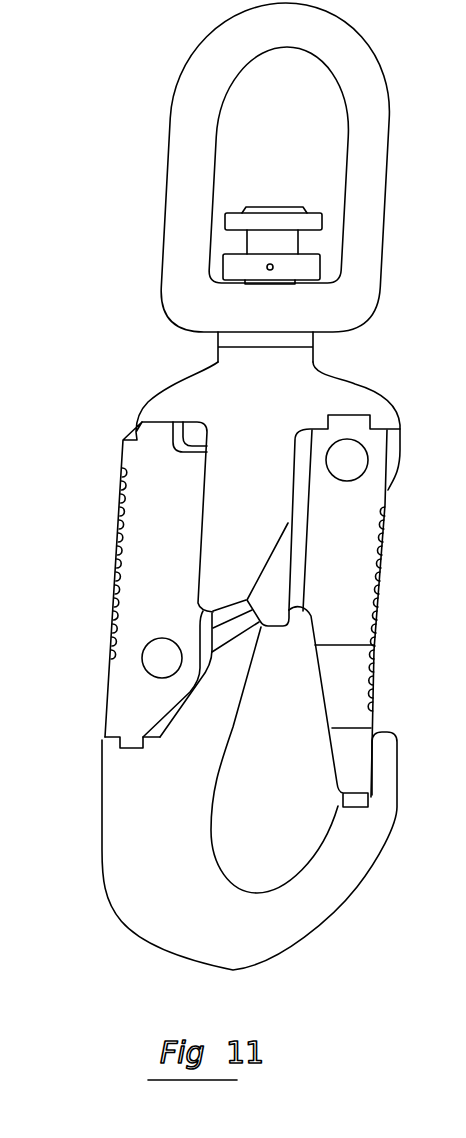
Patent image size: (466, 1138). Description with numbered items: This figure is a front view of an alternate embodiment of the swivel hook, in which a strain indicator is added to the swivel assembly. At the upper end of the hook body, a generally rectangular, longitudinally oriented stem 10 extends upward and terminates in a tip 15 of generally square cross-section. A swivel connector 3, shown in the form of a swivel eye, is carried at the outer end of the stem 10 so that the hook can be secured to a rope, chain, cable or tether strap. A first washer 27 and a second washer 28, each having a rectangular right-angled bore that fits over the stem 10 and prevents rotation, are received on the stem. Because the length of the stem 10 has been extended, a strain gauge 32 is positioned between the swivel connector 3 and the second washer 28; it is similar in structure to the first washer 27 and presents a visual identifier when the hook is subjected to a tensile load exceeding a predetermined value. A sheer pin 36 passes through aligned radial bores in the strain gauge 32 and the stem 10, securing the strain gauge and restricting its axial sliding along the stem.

The swivel connector 3 is at (178, 110).
The tip 15 is at (250, 208).
The second washer 28 is at (228, 222).
The stem 10 is at (253, 240).
The strain gauge 32 is at (237, 265).
The sheer pin 36 is at (267, 271).
The first washer 27 is at (220, 340).